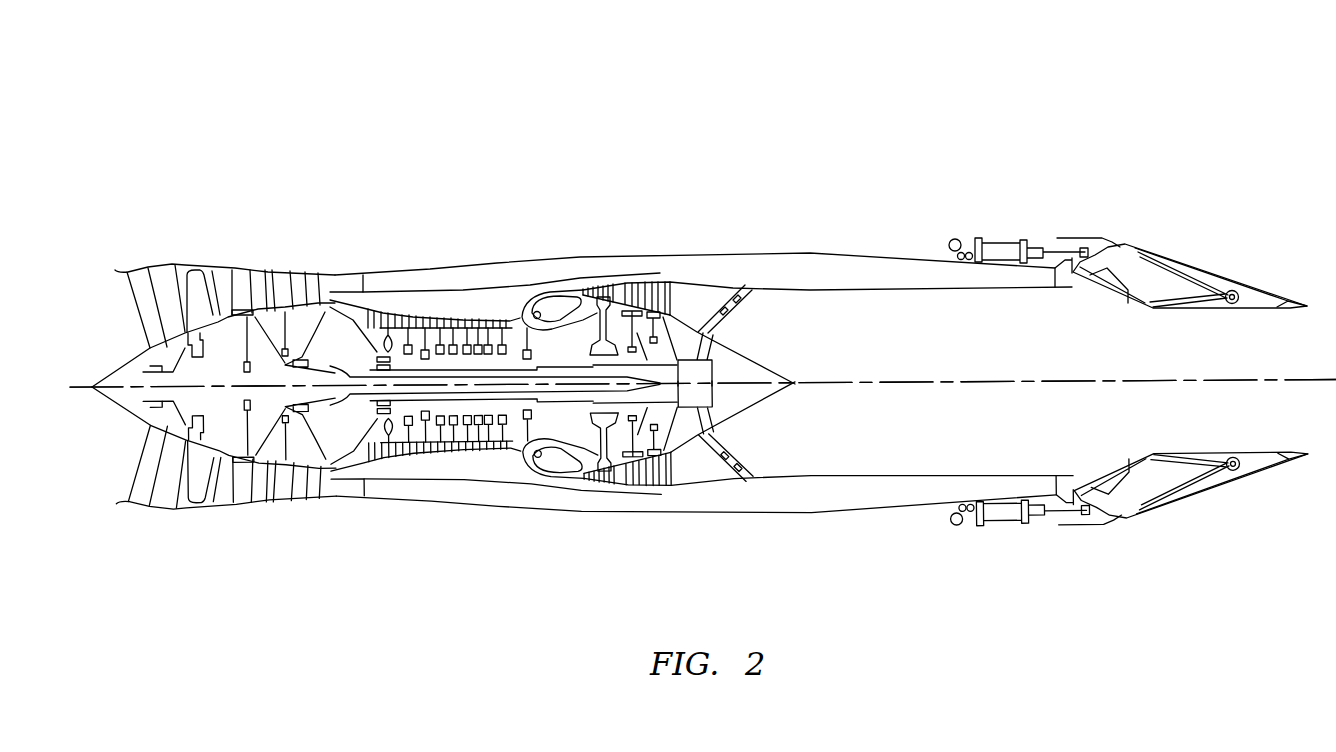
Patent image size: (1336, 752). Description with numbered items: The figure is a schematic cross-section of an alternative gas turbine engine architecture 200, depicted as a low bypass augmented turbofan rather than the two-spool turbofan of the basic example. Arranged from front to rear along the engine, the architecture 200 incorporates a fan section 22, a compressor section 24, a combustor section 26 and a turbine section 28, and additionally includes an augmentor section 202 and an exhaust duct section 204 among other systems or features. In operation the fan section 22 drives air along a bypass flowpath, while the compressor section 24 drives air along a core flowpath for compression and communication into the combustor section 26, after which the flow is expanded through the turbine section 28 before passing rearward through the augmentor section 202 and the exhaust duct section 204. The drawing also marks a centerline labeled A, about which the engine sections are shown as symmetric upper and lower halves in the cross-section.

The alternative engine architecture 200 is at (784, 97).
The fan section 22 is at (112, 202).
The compressor section 24 is at (530, 202).
The combustor section 26 is at (600, 202).
The turbine section 28 is at (672, 202).
The augmentor section 202 is at (672, 202).
The exhaust duct section 204 is at (800, 202).
The central longitudinal axis A is at (1068, 383).